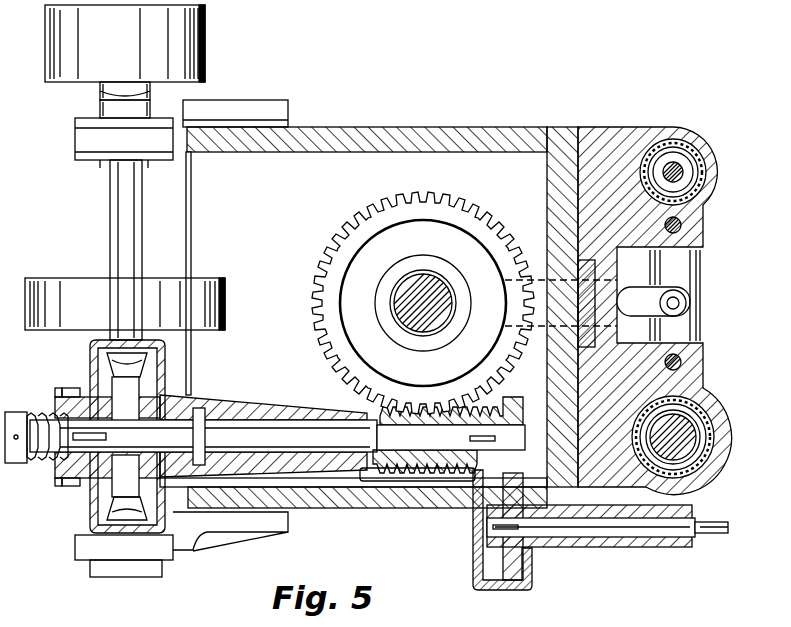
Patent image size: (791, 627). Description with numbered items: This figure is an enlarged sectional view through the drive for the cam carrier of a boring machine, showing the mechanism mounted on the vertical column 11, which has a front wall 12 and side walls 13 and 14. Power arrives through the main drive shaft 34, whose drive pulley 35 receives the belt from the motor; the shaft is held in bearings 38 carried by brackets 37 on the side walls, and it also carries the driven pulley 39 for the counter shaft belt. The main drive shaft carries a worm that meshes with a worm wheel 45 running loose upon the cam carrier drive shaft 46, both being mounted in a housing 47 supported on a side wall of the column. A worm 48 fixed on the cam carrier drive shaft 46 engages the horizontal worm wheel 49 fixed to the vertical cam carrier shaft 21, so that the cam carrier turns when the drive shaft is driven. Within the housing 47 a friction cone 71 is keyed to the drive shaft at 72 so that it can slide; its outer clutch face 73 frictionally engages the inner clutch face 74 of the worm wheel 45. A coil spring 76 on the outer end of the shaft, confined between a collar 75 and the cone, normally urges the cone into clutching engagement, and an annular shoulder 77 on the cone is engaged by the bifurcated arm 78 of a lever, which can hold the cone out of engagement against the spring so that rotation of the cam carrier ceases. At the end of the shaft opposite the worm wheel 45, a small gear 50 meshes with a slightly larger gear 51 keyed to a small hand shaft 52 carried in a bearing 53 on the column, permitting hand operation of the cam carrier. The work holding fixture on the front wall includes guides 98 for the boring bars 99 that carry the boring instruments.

The vertical column 11 is at (478, 131).
The front wall 12 is at (565, 137).
The side wall 13 is at (398, 131).
The side wall 14 is at (365, 505).
The cam carrier shaft 21 is at (395, 303).
The main drive shaft 34 is at (110, 213).
The drive pulley 35 is at (170, 37).
The brackets 37 is at (238, 105).
The bearings 38 is at (80, 122).
The driven pulley 39 is at (150, 290).
The worm wheel 45 is at (112, 507).
The cam carrier drive shaft 46 is at (278, 430).
The housing 47 is at (222, 406).
The worm 48 is at (418, 475).
The worm wheel 49 is at (470, 227).
The small gear 50 is at (512, 402).
The gear 51 is at (480, 588).
The hand shaft 52 is at (665, 535).
The bearing 53 is at (610, 548).
The friction cone 71 is at (100, 362).
The key 72 is at (88, 418).
The outer clutch face 73 is at (119, 378).
The inner clutch face 74 is at (135, 495).
The collar 75 is at (22, 463).
The coil spring 76 is at (48, 462).
The annular shoulder 77 is at (57, 397).
The bifurcated arm 78 is at (72, 395).
The guides 98 is at (706, 150).
The boring bars 99 is at (683, 175).